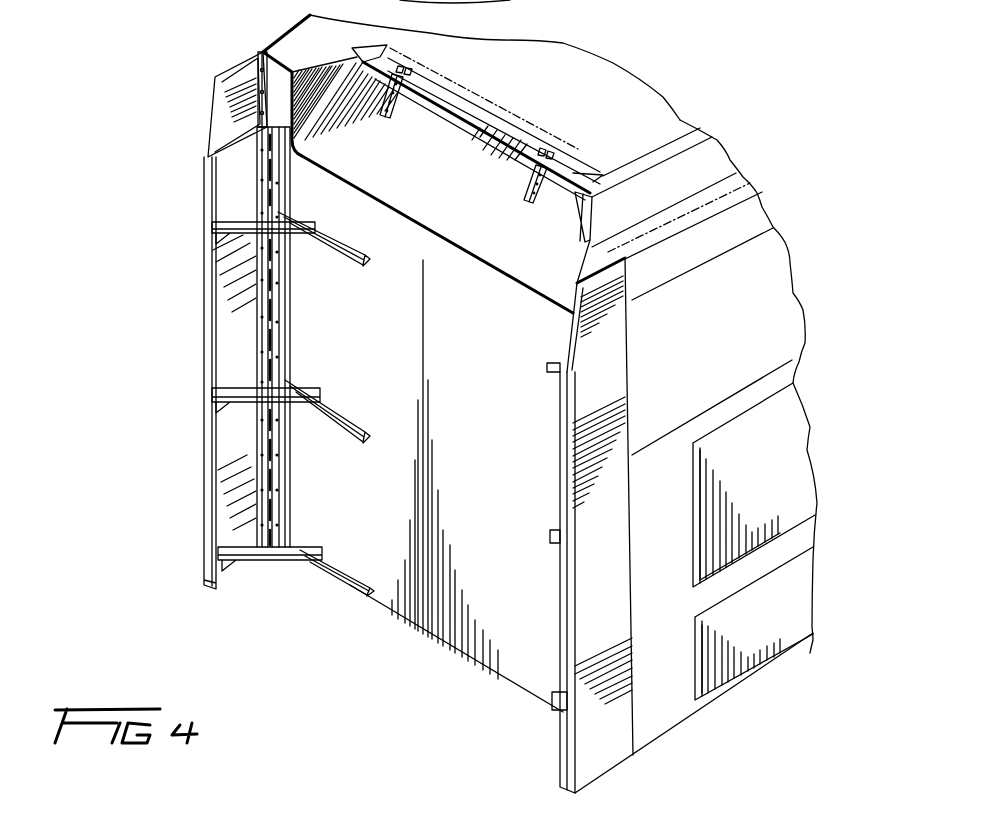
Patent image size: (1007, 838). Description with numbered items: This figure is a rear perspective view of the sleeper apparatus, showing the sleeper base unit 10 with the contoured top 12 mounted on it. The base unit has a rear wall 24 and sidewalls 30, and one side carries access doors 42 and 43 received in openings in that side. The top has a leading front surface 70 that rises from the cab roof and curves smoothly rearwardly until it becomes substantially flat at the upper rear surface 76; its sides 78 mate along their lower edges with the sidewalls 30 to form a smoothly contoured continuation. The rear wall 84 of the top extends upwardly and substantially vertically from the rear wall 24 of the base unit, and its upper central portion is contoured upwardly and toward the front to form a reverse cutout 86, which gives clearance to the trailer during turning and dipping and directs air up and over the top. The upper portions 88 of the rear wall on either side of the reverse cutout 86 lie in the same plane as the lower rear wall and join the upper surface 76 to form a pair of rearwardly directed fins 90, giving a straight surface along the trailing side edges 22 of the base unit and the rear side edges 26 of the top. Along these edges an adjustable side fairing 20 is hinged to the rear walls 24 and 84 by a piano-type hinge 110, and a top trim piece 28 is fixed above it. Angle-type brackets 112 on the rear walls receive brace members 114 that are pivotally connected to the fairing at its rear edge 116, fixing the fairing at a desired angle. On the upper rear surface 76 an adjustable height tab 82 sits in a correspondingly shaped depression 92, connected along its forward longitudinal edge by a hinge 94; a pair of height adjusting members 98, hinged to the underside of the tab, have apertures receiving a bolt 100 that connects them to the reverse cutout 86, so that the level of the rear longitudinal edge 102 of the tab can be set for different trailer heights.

The sleeper base unit 10 is at (815, 440).
The contoured top 12 is at (619, 58).
The adjustable side fairing 20 is at (209, 325).
The trailing side edge of rear wall 22 is at (633, 735).
The rear wall of sleeper base unit 24 is at (460, 443).
The rear side edge of top 26 is at (632, 298).
The top trim piece 28 is at (212, 107).
The sidewall of sleeper base unit 30 is at (687, 707).
The access door 42 is at (803, 493).
The access door 43 is at (790, 603).
The leading front surface of top 70 is at (517, 0).
The upper rear surface of top 76 is at (681, 120).
The side of top 78 is at (773, 333).
The adjustable height tab 82 is at (505, 124).
The rear wall of top 84 is at (450, 316).
The reverse cutout 86 is at (428, 189).
The upper portion of rear wall 88 is at (263, 72).
The rearwardly directed fin 90 is at (290, 50).
The depression 92 is at (577, 190).
The hinge 94 is at (540, 137).
The height adjusting member 98 is at (397, 113).
The bolt 100 is at (520, 197).
The rear longitudinal edge of height tab 102 is at (460, 112).
The piano-type hinge 110 is at (278, 196).
The angle-type bracket 112 is at (333, 240).
The brace member 114 is at (295, 230).
The rear edge of side fairing 116 is at (207, 387).